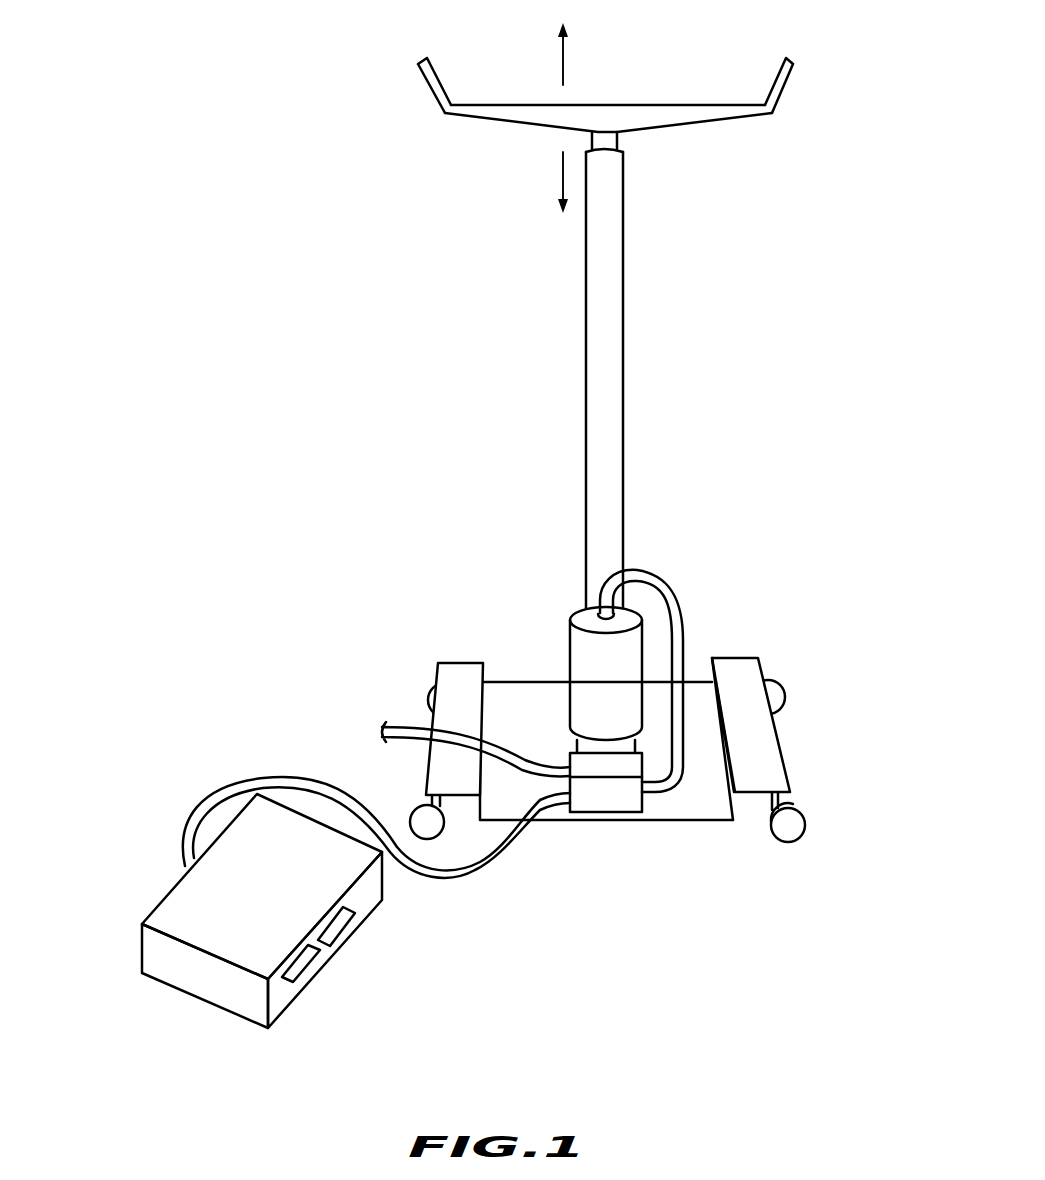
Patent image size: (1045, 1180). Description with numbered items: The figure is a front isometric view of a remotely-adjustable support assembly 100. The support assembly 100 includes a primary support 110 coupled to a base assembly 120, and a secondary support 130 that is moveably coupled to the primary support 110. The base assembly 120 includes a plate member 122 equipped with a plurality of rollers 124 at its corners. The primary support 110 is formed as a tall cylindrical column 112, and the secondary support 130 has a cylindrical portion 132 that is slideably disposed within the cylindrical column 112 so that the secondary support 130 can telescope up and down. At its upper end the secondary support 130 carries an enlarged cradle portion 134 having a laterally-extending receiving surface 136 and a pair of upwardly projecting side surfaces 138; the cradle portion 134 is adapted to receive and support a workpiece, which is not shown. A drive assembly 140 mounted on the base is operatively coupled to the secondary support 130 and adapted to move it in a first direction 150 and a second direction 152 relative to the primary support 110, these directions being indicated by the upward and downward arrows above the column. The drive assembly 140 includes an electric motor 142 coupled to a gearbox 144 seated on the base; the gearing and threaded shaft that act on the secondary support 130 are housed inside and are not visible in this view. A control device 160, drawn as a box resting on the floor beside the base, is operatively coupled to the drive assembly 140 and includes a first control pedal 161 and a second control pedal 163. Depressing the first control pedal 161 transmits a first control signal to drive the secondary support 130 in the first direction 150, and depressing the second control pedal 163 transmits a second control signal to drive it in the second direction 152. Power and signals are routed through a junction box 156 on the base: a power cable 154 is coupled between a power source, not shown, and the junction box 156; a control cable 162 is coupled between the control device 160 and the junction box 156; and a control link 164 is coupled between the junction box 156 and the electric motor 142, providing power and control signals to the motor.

The remotely-adjustable support assembly 100 is at (212, 168).
The primary support 110 is at (655, 298).
The cylindrical column 112 is at (586, 375).
The base assembly 120 is at (445, 648).
The plate member 122 is at (778, 742).
The rollers 124 is at (780, 700).
The secondary support 130 is at (830, 88).
The cylindrical portion 132 is at (622, 138).
The cradle portion 134 is at (492, 123).
The receiving surface 136 is at (633, 103).
The side surfaces 138 is at (442, 82).
The drive assembly 140 is at (702, 640).
The electric motor 142 is at (570, 650).
The gearbox 144 is at (577, 742).
The first direction 150 is at (562, 63).
The second direction 152 is at (562, 174).
The power cable 154 is at (400, 725).
The junction box 156 is at (617, 805).
The control device 160 is at (125, 876).
The first control pedal 161 is at (310, 970).
The control cable 162 is at (495, 858).
The second control pedal 163 is at (343, 930).
The control link 164 is at (672, 582).